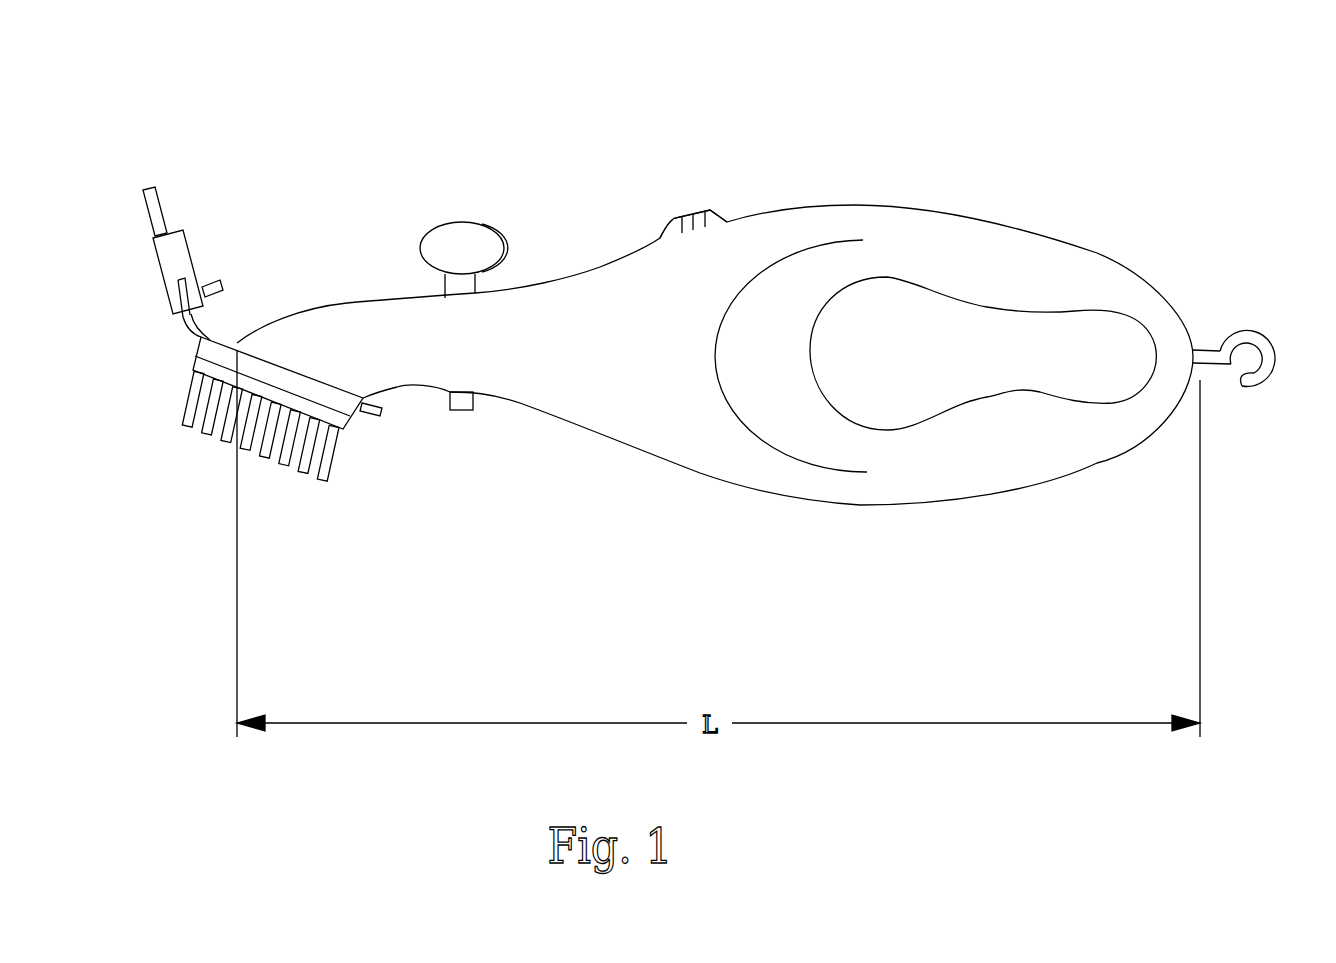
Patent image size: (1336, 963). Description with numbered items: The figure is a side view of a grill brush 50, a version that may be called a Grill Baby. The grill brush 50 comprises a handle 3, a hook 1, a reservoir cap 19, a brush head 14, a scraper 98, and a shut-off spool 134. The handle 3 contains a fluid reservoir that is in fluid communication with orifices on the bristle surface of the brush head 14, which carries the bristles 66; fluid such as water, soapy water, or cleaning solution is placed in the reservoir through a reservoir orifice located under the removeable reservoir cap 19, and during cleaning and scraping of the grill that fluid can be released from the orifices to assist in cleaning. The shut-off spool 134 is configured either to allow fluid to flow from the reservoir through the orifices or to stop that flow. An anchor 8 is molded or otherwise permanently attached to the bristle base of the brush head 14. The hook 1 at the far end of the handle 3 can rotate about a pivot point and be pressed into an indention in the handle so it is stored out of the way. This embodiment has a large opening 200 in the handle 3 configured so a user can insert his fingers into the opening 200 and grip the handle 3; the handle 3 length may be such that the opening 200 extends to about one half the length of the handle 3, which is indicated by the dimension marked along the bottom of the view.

The hook 1 is at (1257, 342).
The handle 3 is at (785, 252).
The anchor 8 is at (390, 415).
The brush head 14 is at (347, 400).
The reservoir cap 19 is at (682, 217).
The grill brush 50 is at (903, 581).
The bristles 66 is at (187, 400).
The scraper 98 is at (168, 252).
The shut-off spool 134 is at (457, 245).
The opening 200 is at (988, 307).